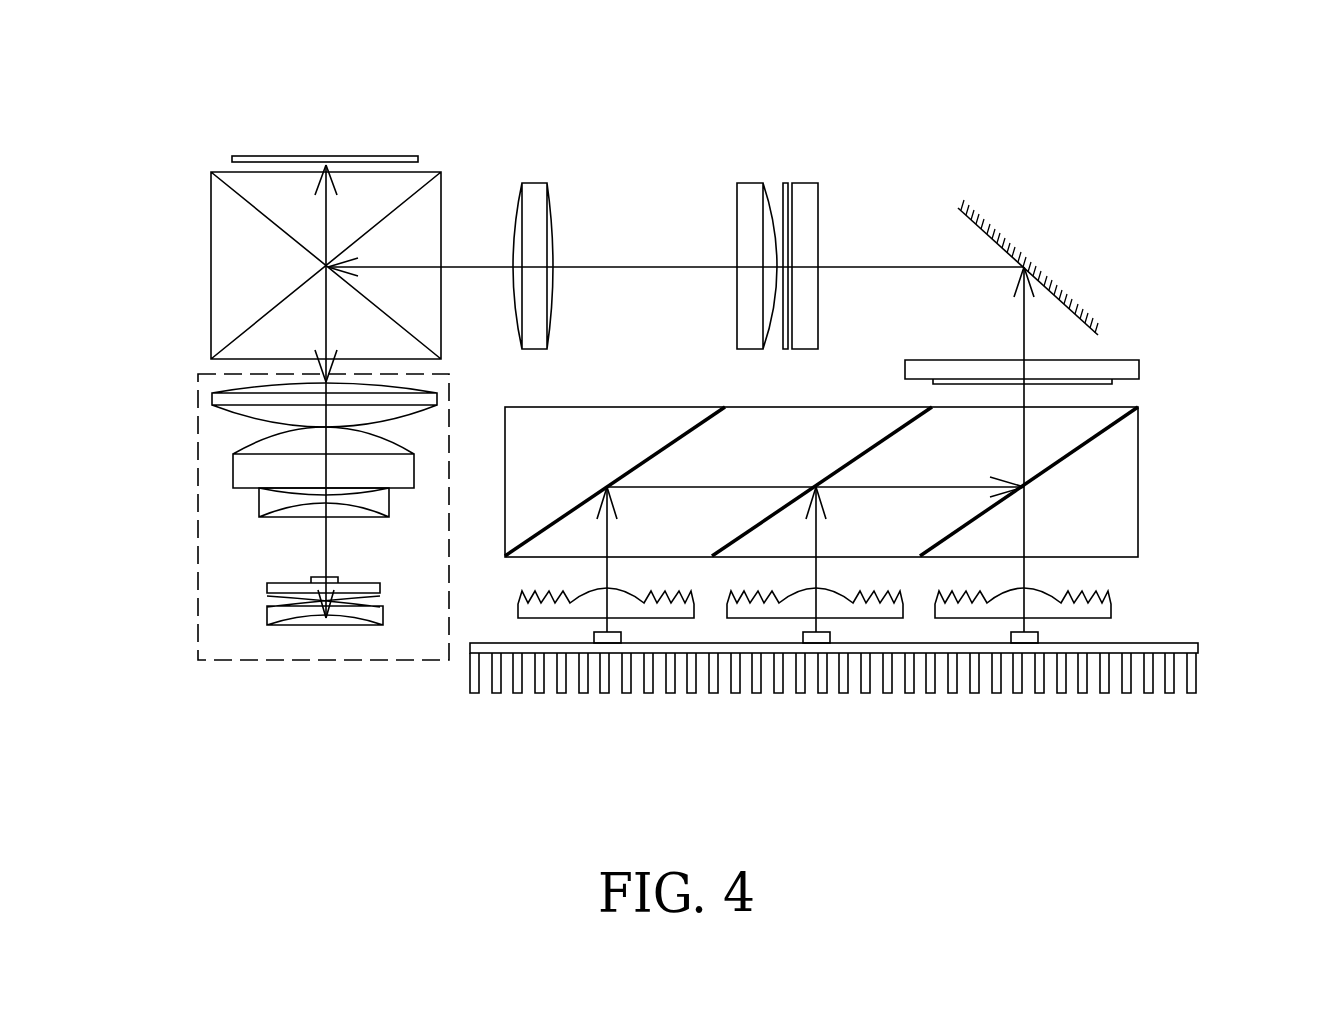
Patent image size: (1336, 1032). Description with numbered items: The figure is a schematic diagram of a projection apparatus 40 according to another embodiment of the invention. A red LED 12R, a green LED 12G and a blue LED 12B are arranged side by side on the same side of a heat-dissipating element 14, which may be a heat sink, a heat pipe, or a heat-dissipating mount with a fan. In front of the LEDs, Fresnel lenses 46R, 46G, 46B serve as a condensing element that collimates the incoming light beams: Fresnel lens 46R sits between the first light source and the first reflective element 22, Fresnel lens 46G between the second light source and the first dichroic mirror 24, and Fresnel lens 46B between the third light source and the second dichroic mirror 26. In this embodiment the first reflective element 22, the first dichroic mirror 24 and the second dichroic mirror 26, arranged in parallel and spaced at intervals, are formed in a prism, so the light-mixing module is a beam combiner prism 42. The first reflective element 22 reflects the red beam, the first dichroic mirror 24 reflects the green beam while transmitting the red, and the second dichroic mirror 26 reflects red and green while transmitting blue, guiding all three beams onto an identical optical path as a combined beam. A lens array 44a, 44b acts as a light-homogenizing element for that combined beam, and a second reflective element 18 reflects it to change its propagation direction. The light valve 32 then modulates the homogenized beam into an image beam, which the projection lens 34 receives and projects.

The projection apparatus 40 is at (1225, 77).
The light valve 32 is at (323, 157).
The projection lens 34 is at (198, 513).
The lens array 44b is at (820, 172).
The second reflective element 18 is at (1032, 257).
The lens array 44a is at (1139, 368).
The beam combiner prism 42 is at (1138, 478).
The first reflective element 22 is at (626, 470).
The first dichroic mirror 24 is at (832, 470).
The second dichroic mirror 26 is at (1065, 455).
The Fresnel lens 46R is at (590, 593).
The Fresnel lens 46G is at (799, 593).
The Fresnel lens 46B is at (1010, 593).
The red LED 12R is at (594, 638).
The green LED 12G is at (803, 638).
The blue LED 12B is at (1011, 638).
The heat-dissipating element 14 is at (1127, 643).